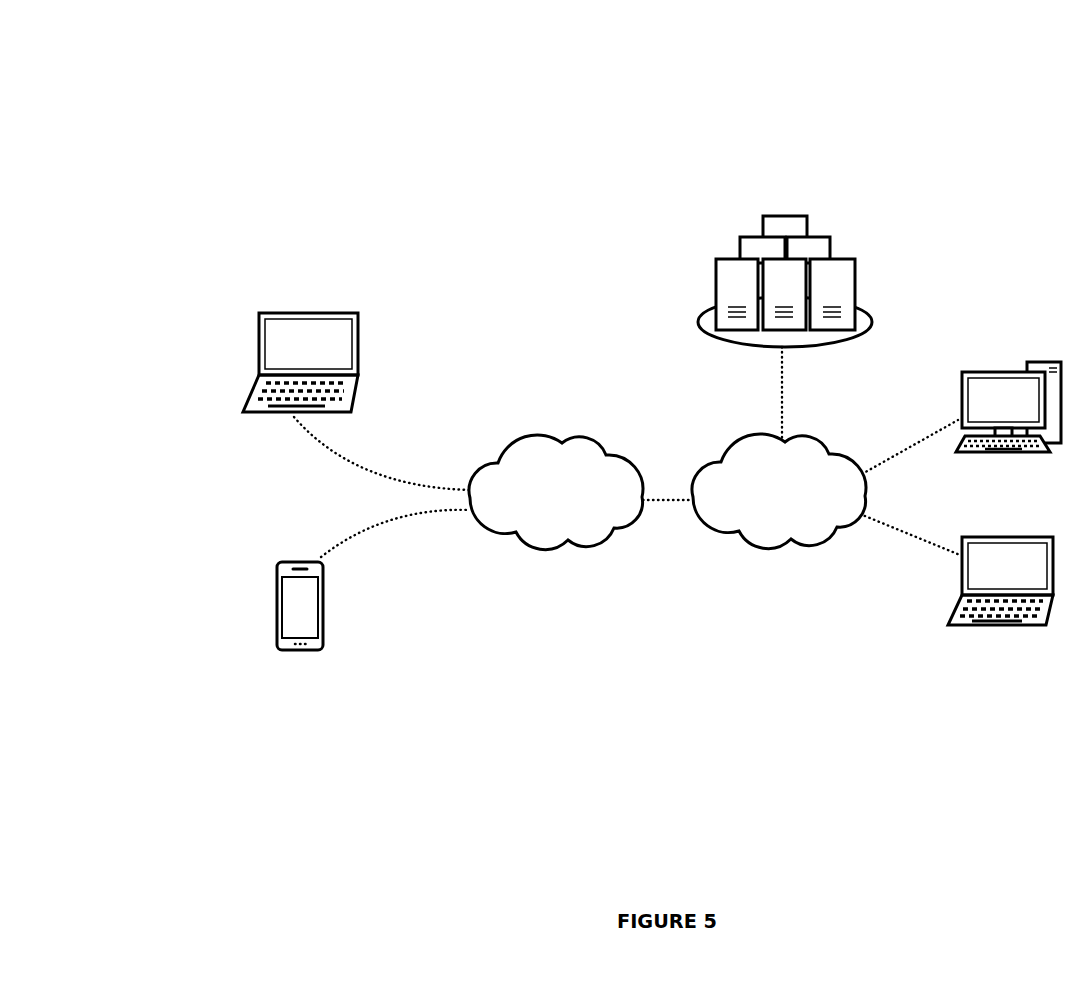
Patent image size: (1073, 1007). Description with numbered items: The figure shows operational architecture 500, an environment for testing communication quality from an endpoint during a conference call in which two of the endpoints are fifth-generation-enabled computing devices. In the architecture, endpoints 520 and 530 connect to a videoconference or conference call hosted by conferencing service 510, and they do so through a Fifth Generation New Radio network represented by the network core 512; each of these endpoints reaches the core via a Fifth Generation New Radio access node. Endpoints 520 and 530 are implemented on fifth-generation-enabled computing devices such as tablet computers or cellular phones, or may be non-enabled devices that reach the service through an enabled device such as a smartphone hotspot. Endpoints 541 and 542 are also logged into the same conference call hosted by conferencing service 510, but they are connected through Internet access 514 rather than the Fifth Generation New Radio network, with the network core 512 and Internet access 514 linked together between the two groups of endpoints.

The operational architecture 500 is at (70, 97).
The conferencing service 510 is at (849, 291).
The 5GNR network core 512 is at (548, 518).
The Internet access 514 is at (767, 518).
The endpoint 520 is at (310, 368).
The endpoint 530 is at (323, 627).
The endpoint 541 is at (1000, 417).
The endpoint 542 is at (1038, 581).